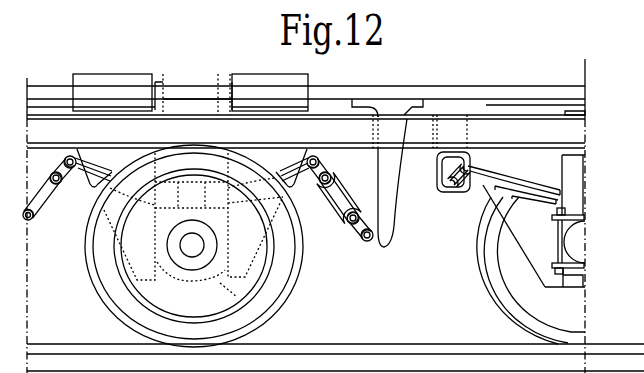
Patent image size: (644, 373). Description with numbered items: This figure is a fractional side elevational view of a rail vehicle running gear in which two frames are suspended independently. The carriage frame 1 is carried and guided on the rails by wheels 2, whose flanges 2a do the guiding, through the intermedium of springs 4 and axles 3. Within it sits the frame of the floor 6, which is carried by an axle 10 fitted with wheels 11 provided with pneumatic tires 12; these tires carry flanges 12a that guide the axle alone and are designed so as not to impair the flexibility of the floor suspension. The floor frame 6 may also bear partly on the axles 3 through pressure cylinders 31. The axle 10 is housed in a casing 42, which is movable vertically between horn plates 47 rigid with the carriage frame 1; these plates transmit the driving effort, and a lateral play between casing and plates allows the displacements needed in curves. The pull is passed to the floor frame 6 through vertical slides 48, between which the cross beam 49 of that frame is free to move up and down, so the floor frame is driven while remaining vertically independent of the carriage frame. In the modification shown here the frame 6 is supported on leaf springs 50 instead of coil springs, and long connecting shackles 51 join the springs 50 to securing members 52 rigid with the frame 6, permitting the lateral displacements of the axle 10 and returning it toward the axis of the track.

The carriage frame 1 is at (93, 138).
The wheels 2 is at (505, 300).
The flanges 2a is at (482, 270).
The axles 3 is at (571, 243).
The springs 4 is at (527, 188).
The floor frame 6 is at (410, 95).
The axle 10 is at (192, 254).
The wheels 11 is at (125, 282).
The pneumatic tires 12 is at (98, 270).
The flanges 12a is at (112, 313).
The pressure cylinders 31 is at (562, 196).
The casing 42 is at (237, 297).
The horn plates 47 is at (92, 192).
The vertical slides 48 is at (220, 77).
The cross beam 49 is at (187, 103).
The leaf springs 50 is at (293, 183).
The connecting shackles 51 is at (341, 181).
The securing members 52 is at (388, 198).